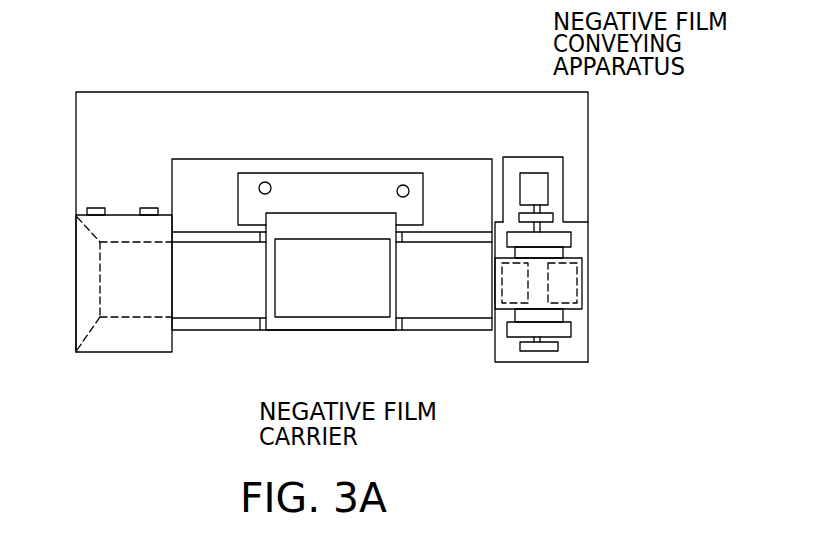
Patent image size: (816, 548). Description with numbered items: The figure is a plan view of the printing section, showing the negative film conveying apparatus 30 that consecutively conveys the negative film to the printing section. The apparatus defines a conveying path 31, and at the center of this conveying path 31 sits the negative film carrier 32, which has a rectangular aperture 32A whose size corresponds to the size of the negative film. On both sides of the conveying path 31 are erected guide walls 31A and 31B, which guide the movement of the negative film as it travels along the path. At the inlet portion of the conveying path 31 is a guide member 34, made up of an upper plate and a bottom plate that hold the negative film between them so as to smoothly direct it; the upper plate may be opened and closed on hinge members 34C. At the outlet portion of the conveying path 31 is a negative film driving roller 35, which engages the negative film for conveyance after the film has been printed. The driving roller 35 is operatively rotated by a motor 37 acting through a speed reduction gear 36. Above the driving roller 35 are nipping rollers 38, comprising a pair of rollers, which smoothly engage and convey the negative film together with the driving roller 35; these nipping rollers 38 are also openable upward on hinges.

The negative film conveying apparatus 30 is at (593, 137).
The conveying path 31 is at (229, 307).
The guide wall 31A is at (188, 332).
The guide wall 31B is at (198, 232).
The negative film carrier 32 is at (259, 332).
The rectangular aperture 32A is at (338, 305).
The guide member 34 is at (72, 308).
The hinge members 34C is at (145, 207).
The negative film driving roller 35 is at (563, 318).
The speed reduction gear 36 is at (553, 216).
The motor 37 is at (548, 190).
The nipping rollers 38 is at (573, 256).